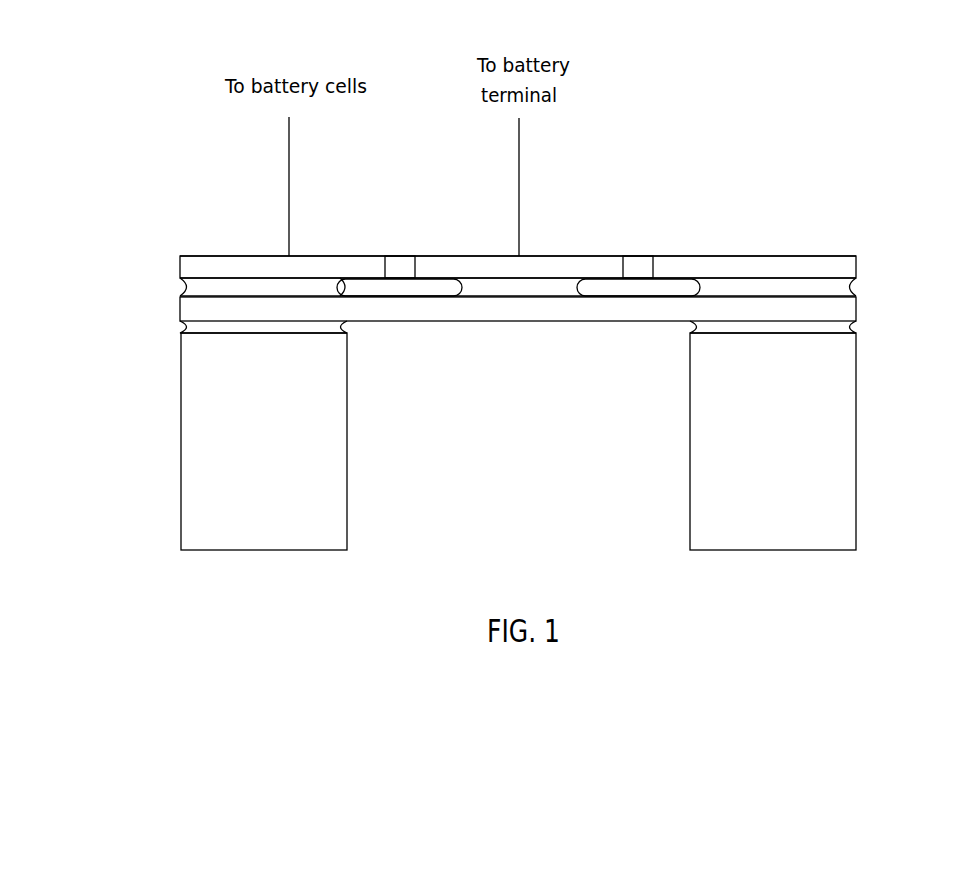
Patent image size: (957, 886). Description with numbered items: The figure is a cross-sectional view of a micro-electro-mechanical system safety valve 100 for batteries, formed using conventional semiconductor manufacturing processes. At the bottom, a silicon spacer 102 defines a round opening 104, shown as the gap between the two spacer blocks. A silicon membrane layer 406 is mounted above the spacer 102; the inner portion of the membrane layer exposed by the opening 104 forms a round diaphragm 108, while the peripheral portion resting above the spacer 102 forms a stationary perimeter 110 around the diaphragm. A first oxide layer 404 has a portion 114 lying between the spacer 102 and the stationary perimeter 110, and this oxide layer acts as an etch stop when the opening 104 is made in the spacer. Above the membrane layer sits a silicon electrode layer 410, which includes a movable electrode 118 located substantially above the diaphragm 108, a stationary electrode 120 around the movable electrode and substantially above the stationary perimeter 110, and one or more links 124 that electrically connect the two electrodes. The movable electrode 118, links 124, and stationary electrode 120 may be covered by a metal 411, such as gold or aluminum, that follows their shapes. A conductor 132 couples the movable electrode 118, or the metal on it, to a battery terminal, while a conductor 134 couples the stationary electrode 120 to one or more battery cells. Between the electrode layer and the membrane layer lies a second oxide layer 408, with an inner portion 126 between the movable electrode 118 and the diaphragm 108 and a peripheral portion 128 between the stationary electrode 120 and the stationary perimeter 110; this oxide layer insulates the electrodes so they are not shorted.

The MEMS safety valve 100 is at (146, 80).
The silicon spacer 102 is at (302, 488).
The opening 104 is at (595, 506).
The diaphragm 108 is at (523, 308).
The stationary perimeter 110 is at (272, 308).
The portion of first oxide layer 114 is at (217, 327).
The movable electrode 118 is at (540, 267).
The stationary electrode 120 is at (202, 268).
The links 124 is at (395, 270).
The inner portion of second oxide layer 126 is at (567, 268).
The peripheral portion of second oxide layer 128 is at (312, 270).
The conductor 132 is at (519, 143).
The conductor 134 is at (289, 165).
The first oxide layer 404 is at (858, 321).
The silicon membrane layer 406 is at (178, 297).
The second oxide layer 408 is at (858, 280).
The silicon electrode layer 410 is at (178, 256).
The metal 411 is at (238, 255).